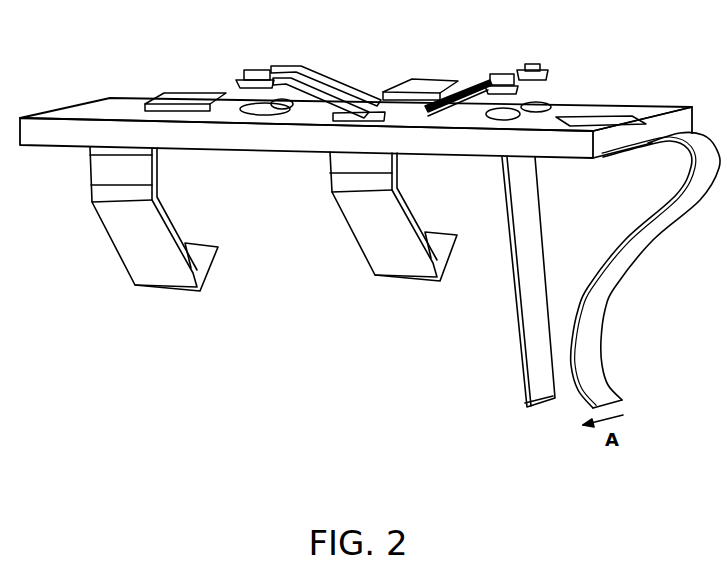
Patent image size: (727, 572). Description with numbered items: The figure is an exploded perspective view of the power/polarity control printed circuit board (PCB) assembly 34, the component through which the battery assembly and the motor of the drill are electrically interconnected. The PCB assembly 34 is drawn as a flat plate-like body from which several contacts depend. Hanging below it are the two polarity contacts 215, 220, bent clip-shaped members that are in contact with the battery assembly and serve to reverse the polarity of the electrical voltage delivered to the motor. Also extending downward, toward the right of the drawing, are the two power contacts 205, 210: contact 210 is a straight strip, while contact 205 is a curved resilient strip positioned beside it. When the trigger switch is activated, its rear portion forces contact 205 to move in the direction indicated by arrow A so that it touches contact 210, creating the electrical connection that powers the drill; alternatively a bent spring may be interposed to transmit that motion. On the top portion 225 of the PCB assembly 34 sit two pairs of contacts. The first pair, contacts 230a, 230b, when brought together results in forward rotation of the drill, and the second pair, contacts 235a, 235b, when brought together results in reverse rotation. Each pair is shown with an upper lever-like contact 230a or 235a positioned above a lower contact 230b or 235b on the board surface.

The power/polarity control printed circuit board (PCB) assembly 34 is at (47, 147).
The power contact 205 is at (603, 323).
The power contact 210 is at (518, 357).
The polarity contact 215 is at (358, 247).
The polarity contact 220 is at (120, 262).
The top portion 225 is at (600, 86).
The contact 230a is at (240, 78).
The contact 230b is at (257, 120).
The contact 235a is at (493, 80).
The contact 235b is at (500, 120).